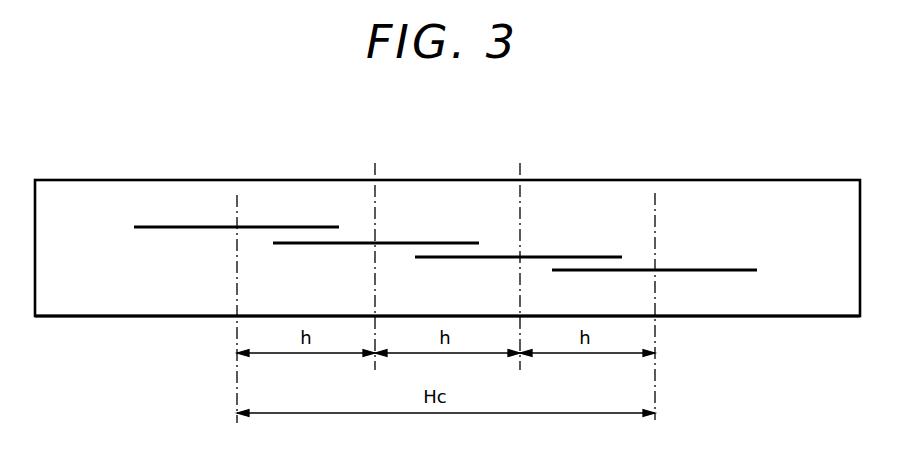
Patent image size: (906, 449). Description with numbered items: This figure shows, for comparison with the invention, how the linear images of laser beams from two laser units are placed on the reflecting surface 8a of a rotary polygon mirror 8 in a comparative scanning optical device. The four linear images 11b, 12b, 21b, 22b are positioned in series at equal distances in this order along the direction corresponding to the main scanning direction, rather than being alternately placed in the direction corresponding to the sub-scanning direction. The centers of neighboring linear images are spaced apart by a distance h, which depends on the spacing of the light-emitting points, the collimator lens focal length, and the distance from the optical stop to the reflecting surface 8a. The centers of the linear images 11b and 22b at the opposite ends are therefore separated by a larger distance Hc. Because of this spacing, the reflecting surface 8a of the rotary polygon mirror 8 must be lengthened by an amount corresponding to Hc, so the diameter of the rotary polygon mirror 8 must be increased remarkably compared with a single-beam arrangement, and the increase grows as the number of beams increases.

The rotary polygon mirror 8 is at (73, 179).
The reflecting surface 8a is at (92, 318).
The linear image 11b is at (180, 226).
The linear image 12b is at (417, 242).
The linear image 21b is at (586, 256).
The linear image 22b is at (720, 268).